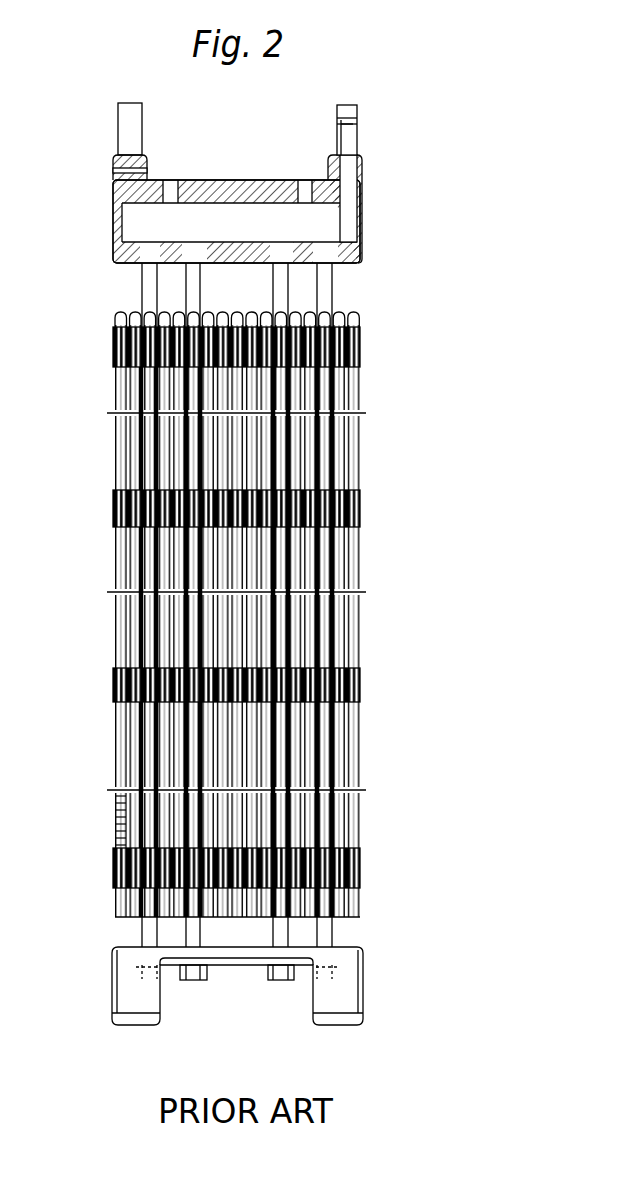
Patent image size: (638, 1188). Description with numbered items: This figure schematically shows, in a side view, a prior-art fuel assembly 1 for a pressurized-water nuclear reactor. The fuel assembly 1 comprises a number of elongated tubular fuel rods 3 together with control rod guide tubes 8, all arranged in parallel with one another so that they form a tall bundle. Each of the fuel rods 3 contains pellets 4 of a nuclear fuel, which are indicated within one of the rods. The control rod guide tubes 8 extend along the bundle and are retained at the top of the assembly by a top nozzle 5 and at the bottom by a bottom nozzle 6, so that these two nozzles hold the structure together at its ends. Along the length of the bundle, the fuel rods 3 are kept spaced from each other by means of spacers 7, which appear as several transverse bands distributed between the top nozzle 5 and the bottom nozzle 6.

The fuel assembly 1 is at (375, 443).
The fuel rods 3 is at (132, 443).
The pellets 4 is at (115, 823).
The top nozzle 5 is at (360, 247).
The bottom nozzle 6 is at (347, 992).
The spacers 7 is at (113, 345).
The control rod guide tubes 8 is at (280, 280).